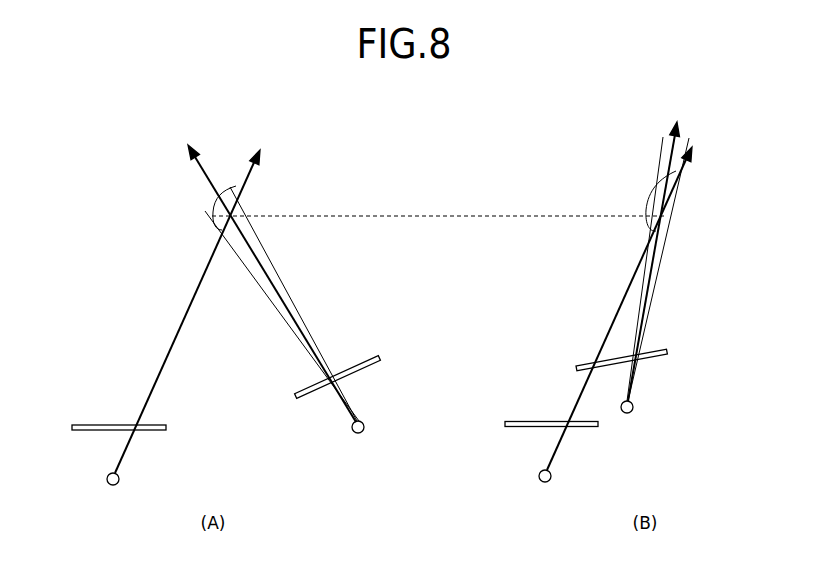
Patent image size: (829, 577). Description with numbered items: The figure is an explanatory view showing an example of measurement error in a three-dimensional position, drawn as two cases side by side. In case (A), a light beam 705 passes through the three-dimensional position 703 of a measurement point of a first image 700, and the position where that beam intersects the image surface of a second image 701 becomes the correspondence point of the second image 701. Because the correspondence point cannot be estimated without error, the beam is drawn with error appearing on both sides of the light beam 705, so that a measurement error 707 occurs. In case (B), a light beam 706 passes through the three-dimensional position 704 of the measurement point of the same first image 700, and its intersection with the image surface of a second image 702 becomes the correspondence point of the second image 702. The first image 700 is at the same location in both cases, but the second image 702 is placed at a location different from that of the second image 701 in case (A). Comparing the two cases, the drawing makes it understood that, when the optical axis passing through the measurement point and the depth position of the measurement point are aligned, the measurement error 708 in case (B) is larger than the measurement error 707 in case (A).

The first image 700 is at (85, 431).
The second image 701 is at (305, 399).
The second image 702 is at (662, 357).
The three-dimensional position 703 is at (242, 217).
The three-dimensional position 704 is at (668, 216).
The light beam 705 is at (259, 269).
The light beam 706 is at (661, 249).
The measurement error 707 is at (213, 207).
The measurement error 708 is at (650, 193).